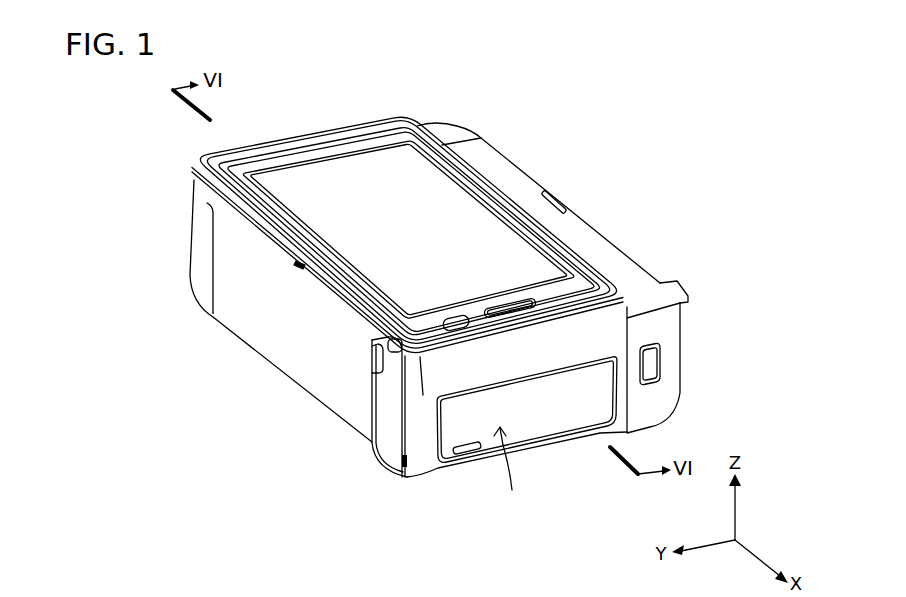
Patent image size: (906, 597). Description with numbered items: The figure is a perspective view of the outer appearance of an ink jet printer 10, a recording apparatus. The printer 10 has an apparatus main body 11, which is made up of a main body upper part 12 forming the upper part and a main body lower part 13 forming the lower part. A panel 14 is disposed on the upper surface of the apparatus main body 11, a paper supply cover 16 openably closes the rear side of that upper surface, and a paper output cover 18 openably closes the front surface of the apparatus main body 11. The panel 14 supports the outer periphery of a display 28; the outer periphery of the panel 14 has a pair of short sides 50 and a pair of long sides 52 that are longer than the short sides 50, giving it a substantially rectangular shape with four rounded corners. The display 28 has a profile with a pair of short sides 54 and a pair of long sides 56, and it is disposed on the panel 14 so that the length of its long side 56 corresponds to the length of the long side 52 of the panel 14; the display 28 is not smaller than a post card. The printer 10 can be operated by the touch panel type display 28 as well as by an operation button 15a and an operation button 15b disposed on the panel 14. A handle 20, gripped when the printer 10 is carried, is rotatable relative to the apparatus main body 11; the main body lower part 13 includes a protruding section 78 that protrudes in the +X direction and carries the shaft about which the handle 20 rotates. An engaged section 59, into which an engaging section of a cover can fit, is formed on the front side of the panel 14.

The ink jet printer 10 is at (530, 108).
The apparatus main body 11 is at (504, 366).
The main body upper part 12 is at (660, 292).
The main body lower part 13 is at (391, 437).
The panel 14 is at (407, 122).
The operation button 15a is at (458, 333).
The operation button 15b is at (515, 306).
The paper supply cover 16 is at (620, 258).
The paper output cover 18 is at (297, 352).
The handle 20 is at (528, 453).
The display 28 is at (480, 223).
The short sides 50 is at (187, 157).
The long sides 52 is at (166, 222).
The short sides 54 is at (258, 181).
The long sides 56 is at (346, 256).
The engaged section 59 is at (297, 267).
The protruding section 78 is at (510, 473).